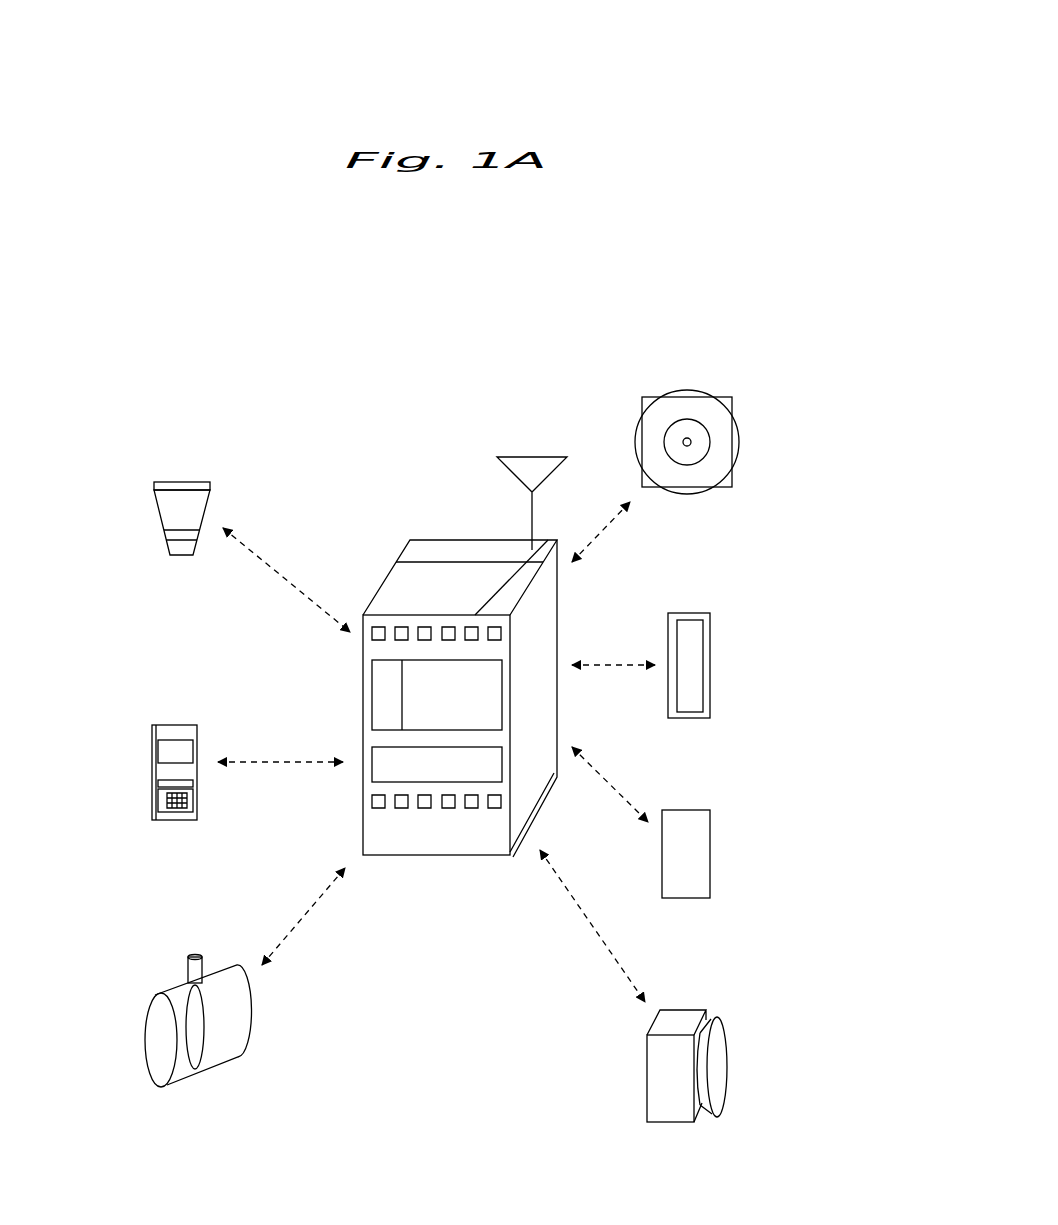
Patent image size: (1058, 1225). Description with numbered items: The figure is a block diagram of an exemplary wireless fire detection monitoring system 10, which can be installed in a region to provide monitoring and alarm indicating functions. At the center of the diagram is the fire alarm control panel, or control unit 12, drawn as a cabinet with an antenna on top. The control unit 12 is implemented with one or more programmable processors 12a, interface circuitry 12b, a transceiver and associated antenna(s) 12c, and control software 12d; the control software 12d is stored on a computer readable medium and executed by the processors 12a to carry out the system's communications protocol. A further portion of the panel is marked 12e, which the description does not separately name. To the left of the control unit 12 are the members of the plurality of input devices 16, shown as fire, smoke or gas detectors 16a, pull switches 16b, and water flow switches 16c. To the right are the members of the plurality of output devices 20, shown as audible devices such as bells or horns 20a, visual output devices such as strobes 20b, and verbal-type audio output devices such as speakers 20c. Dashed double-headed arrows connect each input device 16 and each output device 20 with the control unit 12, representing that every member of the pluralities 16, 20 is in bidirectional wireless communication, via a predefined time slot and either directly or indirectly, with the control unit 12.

The fire detection monitoring system 10 is at (672, 102).
The control unit 12 is at (452, 858).
The programmable processors 12a is at (393, 602).
The interface circuitry 12b is at (447, 548).
The transceiver and associated antenna(s) 12c is at (543, 548).
The control software 12d is at (507, 594).
The front panel of fire panel 12e is at (348, 817).
The plurality of input devices 16 is at (180, 340).
The fire, smoke or gas detectors 16a is at (170, 482).
The pull switches 16b is at (163, 723).
The water flow switches 16c is at (173, 987).
The plurality of output devices 20 is at (712, 297).
The audible devices 20a is at (683, 390).
The strobes 20b is at (685, 613).
The speakers 20c is at (685, 1008).